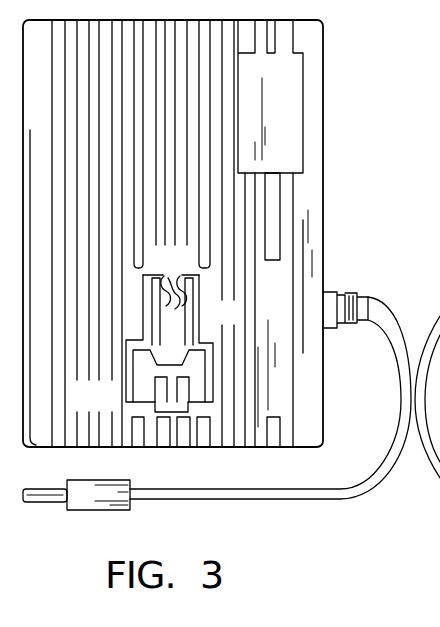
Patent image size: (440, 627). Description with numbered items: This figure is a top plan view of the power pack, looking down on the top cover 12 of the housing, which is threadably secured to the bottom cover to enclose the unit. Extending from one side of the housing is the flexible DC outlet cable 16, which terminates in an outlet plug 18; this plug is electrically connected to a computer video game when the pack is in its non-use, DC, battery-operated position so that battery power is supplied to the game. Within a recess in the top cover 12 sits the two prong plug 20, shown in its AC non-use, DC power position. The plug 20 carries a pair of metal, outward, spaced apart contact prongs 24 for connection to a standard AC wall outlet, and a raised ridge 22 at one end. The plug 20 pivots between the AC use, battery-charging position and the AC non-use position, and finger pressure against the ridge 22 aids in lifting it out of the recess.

The top cover 12 is at (327, 63).
The flexible DC outlet cable 16 is at (352, 499).
The outlet plug 18 is at (62, 503).
The two prong plug 20 is at (140, 362).
The raised ridge 22 is at (183, 360).
The contact prongs 24 is at (173, 278).